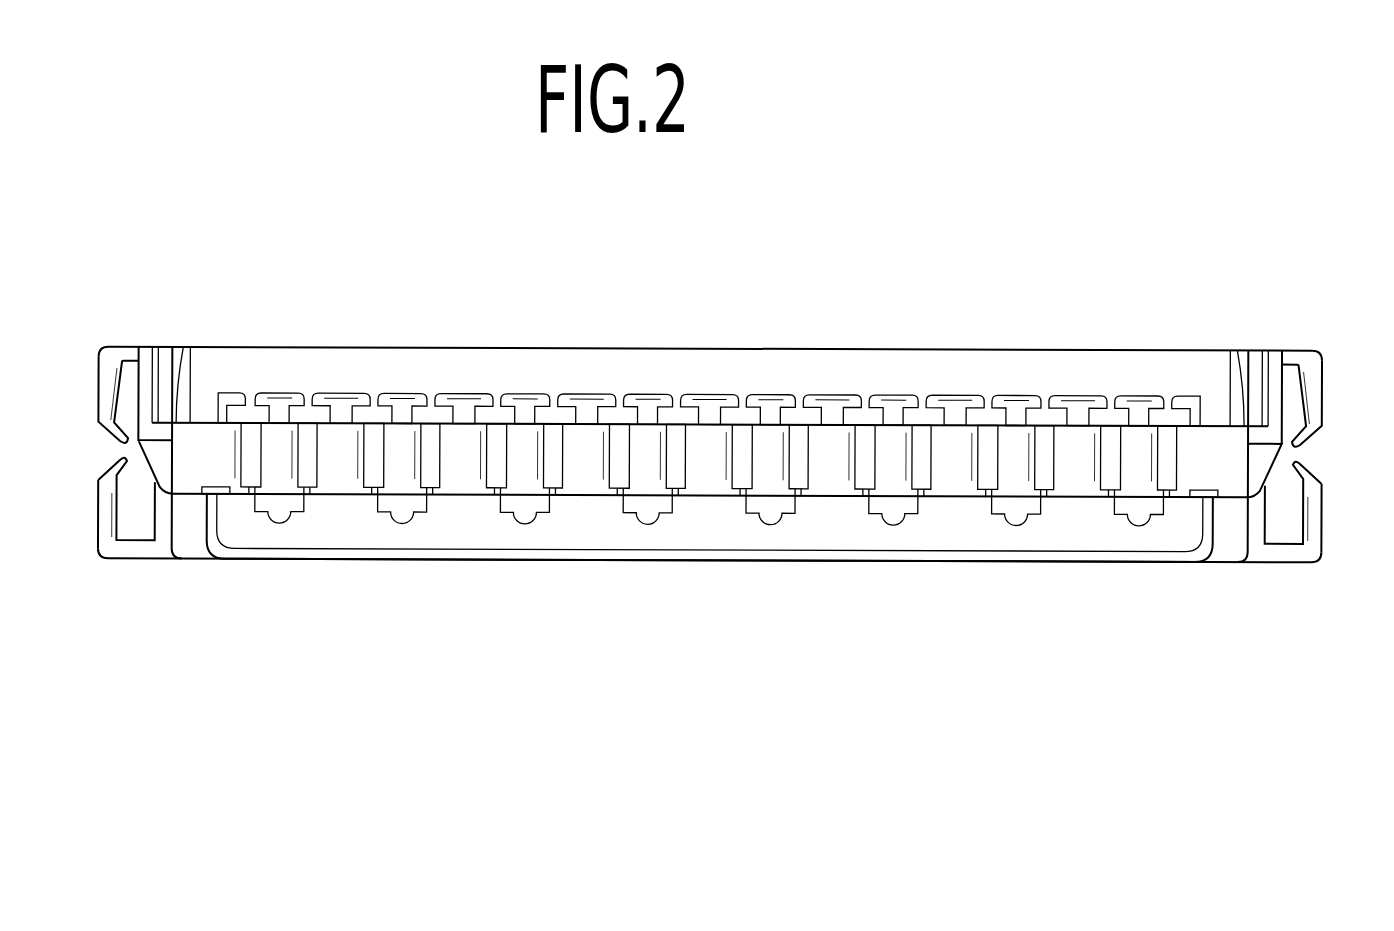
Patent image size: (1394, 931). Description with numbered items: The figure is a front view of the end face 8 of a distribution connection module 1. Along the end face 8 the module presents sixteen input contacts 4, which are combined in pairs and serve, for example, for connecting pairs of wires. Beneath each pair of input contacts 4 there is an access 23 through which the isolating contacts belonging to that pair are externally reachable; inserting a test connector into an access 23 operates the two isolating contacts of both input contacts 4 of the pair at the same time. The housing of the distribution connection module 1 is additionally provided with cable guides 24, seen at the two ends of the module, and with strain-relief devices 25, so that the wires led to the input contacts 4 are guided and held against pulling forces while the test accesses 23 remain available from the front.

The distribution connection module 1 is at (1000, 288).
The input contacts 4 is at (250, 467).
The end face 8 is at (708, 472).
The access 23 is at (771, 507).
The cable guides 24 is at (108, 390).
The strain-relief devices 25 is at (276, 398).